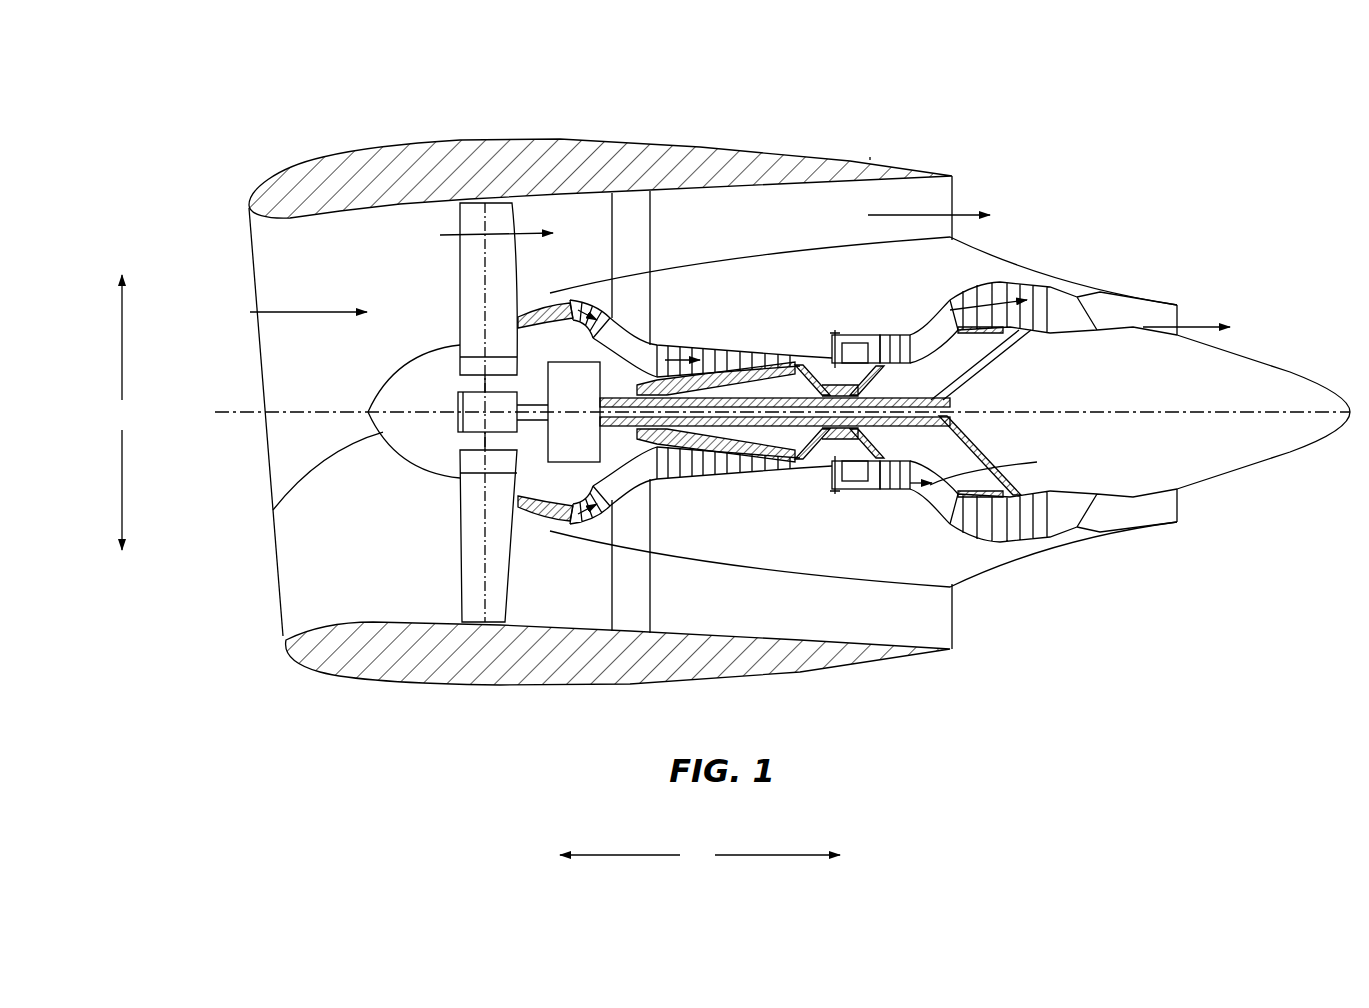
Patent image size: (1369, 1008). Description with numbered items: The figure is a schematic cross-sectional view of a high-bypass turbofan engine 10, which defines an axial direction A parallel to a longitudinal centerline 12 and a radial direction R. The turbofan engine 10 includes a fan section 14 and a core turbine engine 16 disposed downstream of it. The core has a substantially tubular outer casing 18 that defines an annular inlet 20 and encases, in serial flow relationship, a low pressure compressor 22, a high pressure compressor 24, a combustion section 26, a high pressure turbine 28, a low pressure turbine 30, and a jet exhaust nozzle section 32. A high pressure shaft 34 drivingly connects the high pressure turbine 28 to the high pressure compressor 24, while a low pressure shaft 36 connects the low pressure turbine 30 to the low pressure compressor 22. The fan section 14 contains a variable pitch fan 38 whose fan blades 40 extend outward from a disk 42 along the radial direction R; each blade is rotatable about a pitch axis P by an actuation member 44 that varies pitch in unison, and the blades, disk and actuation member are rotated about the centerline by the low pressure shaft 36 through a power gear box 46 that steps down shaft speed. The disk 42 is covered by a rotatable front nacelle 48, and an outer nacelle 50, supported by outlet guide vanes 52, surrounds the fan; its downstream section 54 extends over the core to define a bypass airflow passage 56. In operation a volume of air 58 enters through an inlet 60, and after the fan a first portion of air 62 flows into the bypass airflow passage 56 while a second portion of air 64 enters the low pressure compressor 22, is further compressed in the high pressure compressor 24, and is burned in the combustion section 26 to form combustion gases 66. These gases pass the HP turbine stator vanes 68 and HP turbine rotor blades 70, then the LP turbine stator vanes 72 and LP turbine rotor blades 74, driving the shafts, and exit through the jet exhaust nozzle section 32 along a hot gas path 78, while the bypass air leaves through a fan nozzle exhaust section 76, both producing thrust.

The turbofan engine 10 is at (1093, 157).
The longitudinal centerline 12 is at (1117, 412).
The fan section 14 is at (503, 112).
The core turbine engine 16 is at (820, 303).
The outer casing 18 is at (810, 577).
The annular inlet 20 is at (550, 519).
The low pressure compressor 22 is at (613, 482).
The high pressure compressor 24 is at (678, 465).
The combustion section 26 is at (850, 477).
The high pressure turbine 28 is at (963, 473).
The low pressure turbine 30 is at (1033, 533).
The jet exhaust nozzle section 32 is at (1097, 517).
The high pressure shaft 34 is at (857, 383).
The low pressure shaft 36 is at (987, 373).
The variable pitch fan 38 is at (428, 463).
The fan blades 40 is at (457, 563).
The disk 42 is at (477, 368).
The actuation member 44 is at (457, 392).
The power gear box 46 is at (590, 387).
The front nacelle 48 is at (383, 432).
The outer nacelle 50 is at (507, 685).
The outlet guide vanes 52 is at (650, 220).
The downstream section 54 is at (870, 157).
The bypass airflow passage 56 is at (863, 412).
The volume of air 58 is at (300, 310).
The inlet 60 is at (280, 630).
The first portion of air 62 is at (477, 233).
The second portion of air 64 is at (572, 305).
The combustion gases 66 is at (893, 330).
The HP turbine stator vanes 68 is at (867, 483).
The HP turbine rotor blades 70 is at (907, 458).
The LP turbine stator vanes 72 is at (958, 527).
The LP turbine rotor blades 74 is at (970, 530).
The fan nozzle exhaust section 76 is at (940, 200).
The hot gas path 78 is at (940, 313).
The pitch axis P is at (487, 217).
The radial direction R is at (122, 412).
The axial direction A is at (700, 855).